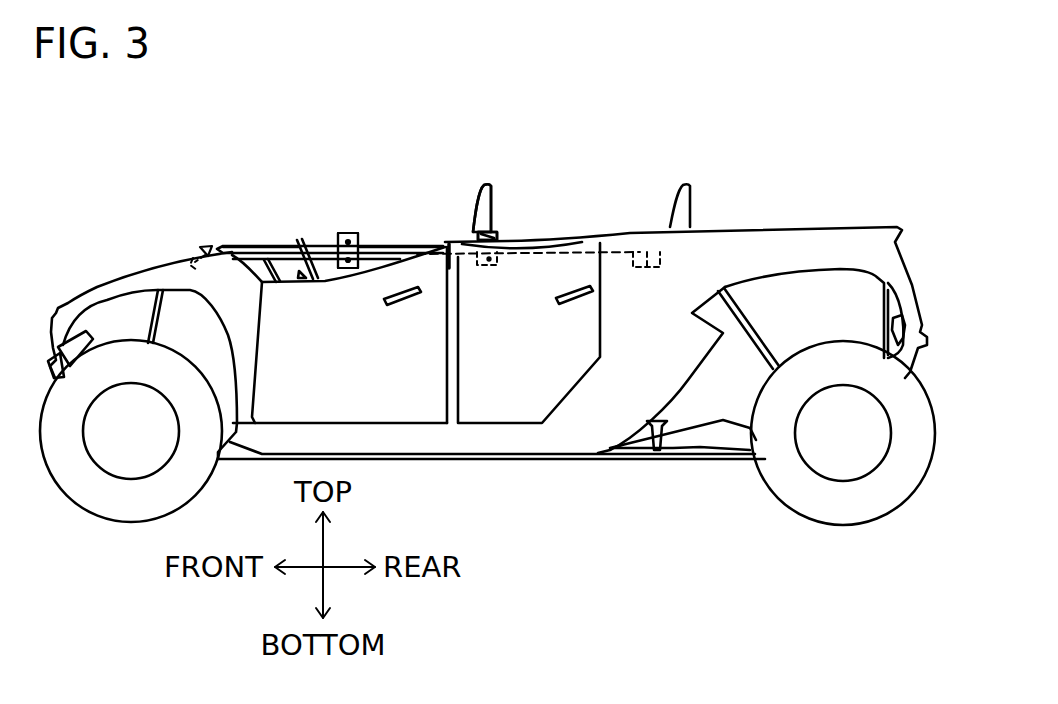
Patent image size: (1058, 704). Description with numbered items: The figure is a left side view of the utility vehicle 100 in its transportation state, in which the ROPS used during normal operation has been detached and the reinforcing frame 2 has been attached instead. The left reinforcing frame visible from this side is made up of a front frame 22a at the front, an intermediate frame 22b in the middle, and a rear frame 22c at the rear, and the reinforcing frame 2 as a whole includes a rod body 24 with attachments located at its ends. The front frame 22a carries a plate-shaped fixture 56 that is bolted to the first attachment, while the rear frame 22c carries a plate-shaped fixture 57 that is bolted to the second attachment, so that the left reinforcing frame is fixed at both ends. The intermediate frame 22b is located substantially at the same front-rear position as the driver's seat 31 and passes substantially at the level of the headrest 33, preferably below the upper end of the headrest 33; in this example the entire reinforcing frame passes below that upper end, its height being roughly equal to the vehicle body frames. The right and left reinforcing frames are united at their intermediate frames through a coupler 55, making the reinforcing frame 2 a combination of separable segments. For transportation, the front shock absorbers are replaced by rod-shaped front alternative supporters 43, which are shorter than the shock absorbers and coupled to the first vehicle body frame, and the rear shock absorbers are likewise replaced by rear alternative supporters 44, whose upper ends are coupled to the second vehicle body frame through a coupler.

The vehicle 100 is at (682, 136).
The reinforcing frame 2 is at (286, 237).
The front frame 22a is at (243, 247).
The intermediate frame 22b is at (397, 245).
The rear frame 22c is at (562, 240).
The rod body 24 is at (326, 244).
The driver's seat 31 is at (492, 173).
The headrest 33 is at (493, 210).
The front alternative supporters 43 is at (150, 318).
The rear alternative supporters 44 is at (753, 322).
The coupler 55 is at (350, 273).
The fixture 56 is at (205, 250).
The fixture 57 is at (645, 268).